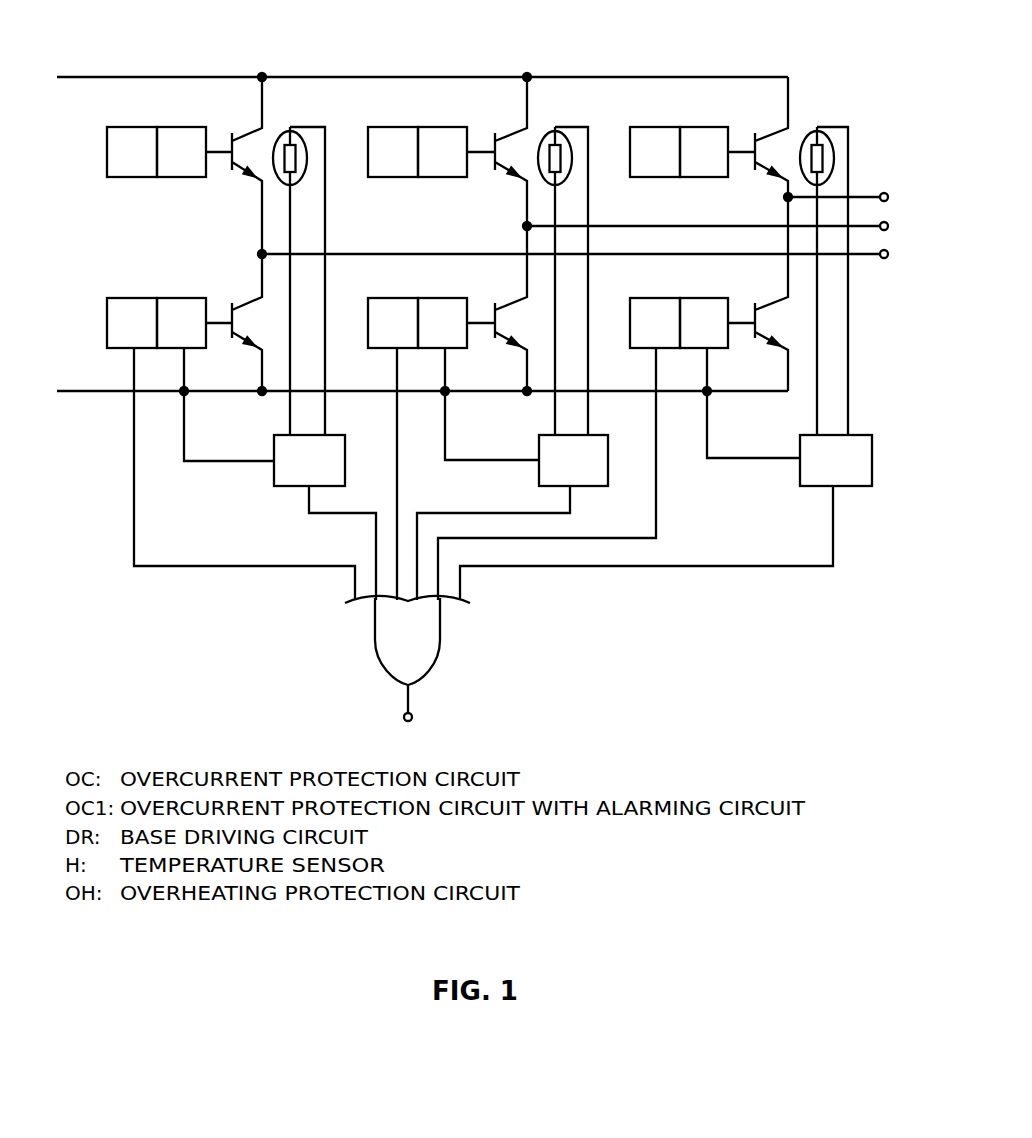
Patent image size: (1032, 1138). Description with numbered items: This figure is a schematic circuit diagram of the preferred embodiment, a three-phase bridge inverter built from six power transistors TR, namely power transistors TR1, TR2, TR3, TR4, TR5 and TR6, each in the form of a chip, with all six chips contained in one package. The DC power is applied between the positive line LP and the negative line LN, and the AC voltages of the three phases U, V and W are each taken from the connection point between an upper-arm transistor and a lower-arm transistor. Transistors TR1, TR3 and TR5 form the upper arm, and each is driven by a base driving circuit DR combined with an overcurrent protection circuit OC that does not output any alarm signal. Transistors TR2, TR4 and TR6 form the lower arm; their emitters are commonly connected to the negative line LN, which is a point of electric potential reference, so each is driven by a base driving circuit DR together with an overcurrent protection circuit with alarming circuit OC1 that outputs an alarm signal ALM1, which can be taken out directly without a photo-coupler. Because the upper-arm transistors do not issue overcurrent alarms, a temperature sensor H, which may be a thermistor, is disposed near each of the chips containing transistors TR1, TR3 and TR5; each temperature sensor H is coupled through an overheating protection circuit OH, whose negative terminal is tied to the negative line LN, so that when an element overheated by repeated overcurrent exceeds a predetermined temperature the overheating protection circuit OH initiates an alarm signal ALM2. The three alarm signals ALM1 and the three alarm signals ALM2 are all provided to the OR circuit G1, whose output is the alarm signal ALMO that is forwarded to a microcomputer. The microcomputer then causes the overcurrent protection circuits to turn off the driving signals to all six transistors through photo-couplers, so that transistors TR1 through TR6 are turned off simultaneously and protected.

The power transistor TR is at (225, 94).
The power transistor TR1 is at (234, 165).
The power transistor TR2 is at (234, 322).
The power transistor TR3 is at (497, 152).
The power transistor TR4 is at (497, 309).
The power transistor TR5 is at (758, 137).
The power transistor TR6 is at (758, 294).
The positive line LP is at (140, 77).
The negative line LN is at (106, 394).
The overcurrent protection circuit OC is at (393, 152).
The overcurrent protection circuit with alarming circuit OC1 is at (393, 323).
The base driving circuit DR is at (478, 294).
The temperature sensor H is at (570, 281).
The overheating protection circuit OH is at (573, 460).
The OR circuit G1 is at (440, 632).
The alarm signal ALM1 is at (395, 474).
The alarm signal ALM2 is at (571, 543).
The alarm signal ALMO is at (409, 700).
The AC output phase U is at (846, 198).
The AC output phase V is at (715, 227).
The AC output phase W is at (585, 255).